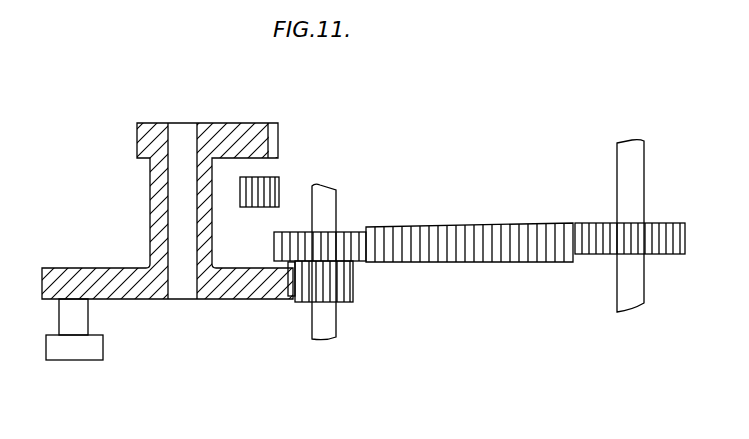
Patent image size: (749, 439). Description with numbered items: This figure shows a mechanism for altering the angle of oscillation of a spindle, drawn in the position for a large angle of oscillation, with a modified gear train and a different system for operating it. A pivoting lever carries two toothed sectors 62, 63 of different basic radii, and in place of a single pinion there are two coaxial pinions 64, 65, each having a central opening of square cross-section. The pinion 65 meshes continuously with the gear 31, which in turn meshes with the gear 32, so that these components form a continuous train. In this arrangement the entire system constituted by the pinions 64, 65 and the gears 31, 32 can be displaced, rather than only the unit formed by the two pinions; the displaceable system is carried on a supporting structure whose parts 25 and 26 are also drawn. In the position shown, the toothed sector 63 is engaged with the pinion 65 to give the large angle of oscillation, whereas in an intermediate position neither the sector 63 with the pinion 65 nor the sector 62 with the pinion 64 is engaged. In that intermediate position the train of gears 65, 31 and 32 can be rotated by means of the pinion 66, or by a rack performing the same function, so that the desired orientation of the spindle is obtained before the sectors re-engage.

The toothed sector 63 is at (247, 128).
The pinion 66 is at (273, 180).
The pinion 65 is at (333, 240).
The gear 31 is at (432, 242).
The gear 32 is at (637, 238).
The pinion 64 is at (353, 283).
The toothed sector 62 is at (289, 290).
The post 26 is at (80, 316).
The foot 25 is at (90, 353).